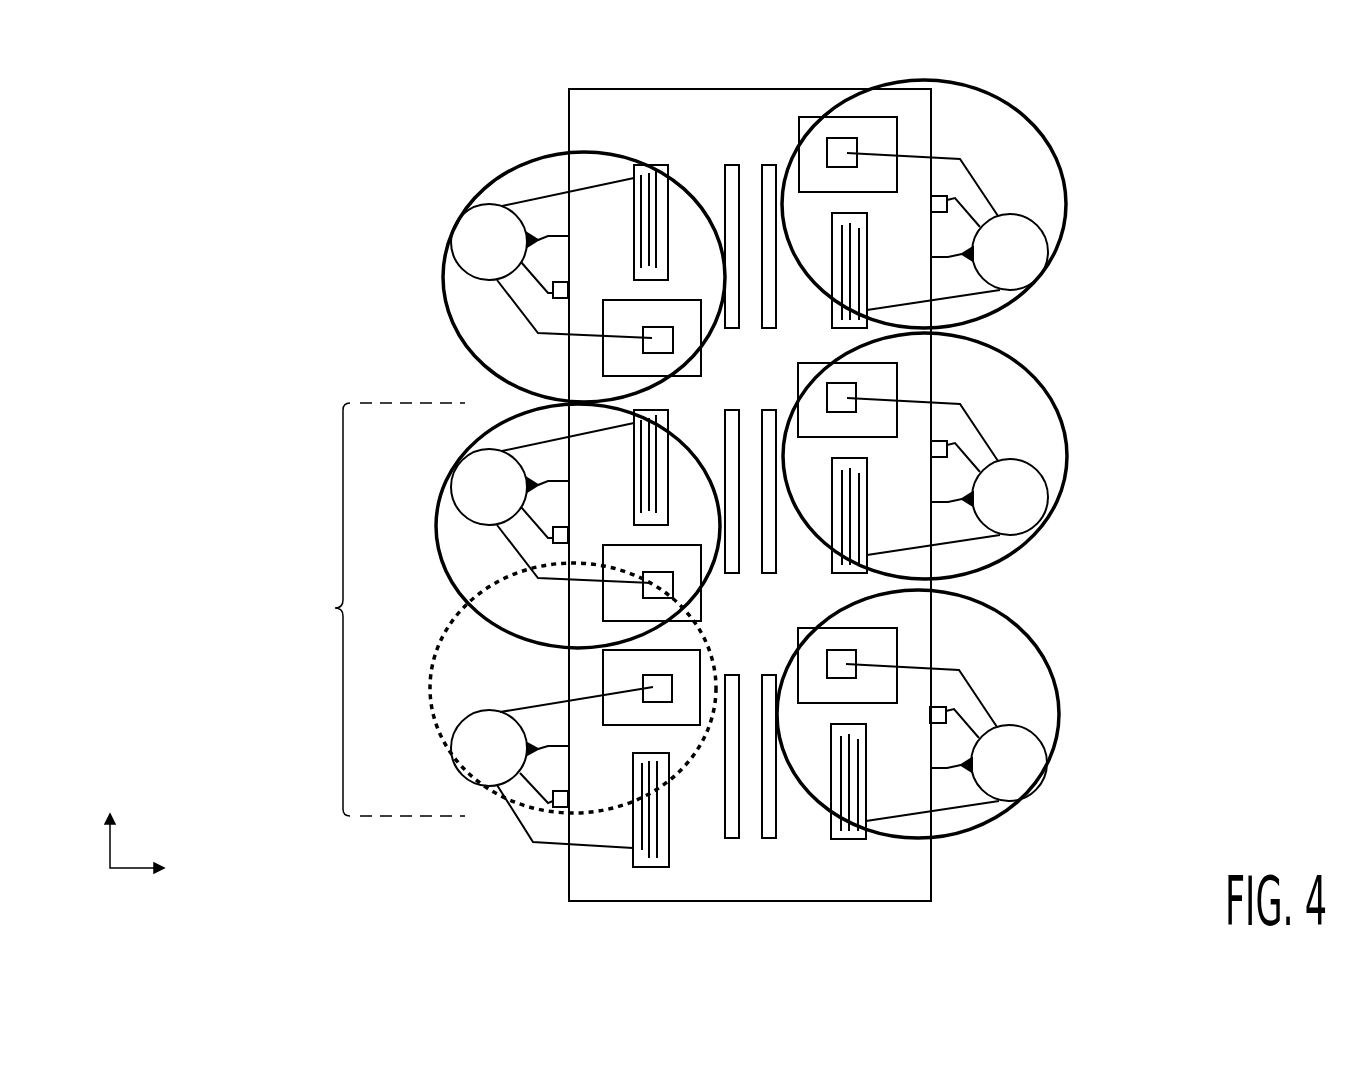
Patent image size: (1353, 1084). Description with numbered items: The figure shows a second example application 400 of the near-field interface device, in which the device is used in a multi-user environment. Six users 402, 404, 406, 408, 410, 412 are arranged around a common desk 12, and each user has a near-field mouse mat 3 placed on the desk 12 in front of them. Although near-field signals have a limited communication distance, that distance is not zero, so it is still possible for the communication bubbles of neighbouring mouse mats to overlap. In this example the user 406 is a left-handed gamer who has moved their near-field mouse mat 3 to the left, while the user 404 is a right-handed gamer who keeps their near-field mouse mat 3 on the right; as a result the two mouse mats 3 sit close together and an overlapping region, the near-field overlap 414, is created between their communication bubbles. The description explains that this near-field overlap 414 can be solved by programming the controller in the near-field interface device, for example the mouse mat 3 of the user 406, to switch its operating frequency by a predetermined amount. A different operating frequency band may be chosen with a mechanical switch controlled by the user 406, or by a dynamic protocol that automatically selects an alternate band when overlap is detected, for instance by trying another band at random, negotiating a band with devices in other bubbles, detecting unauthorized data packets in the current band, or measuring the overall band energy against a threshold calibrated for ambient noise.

The second example application 400 is at (195, 156).
The user 402 is at (498, 177).
The user 404 is at (432, 525).
The user 406 is at (434, 684).
The user 408 is at (1050, 128).
The user 410 is at (1057, 410).
The user 412 is at (1047, 648).
The near-field overlap 414 is at (375, 609).
The near-field mouse mat 3 is at (627, 313).
The desk 12 is at (764, 888).